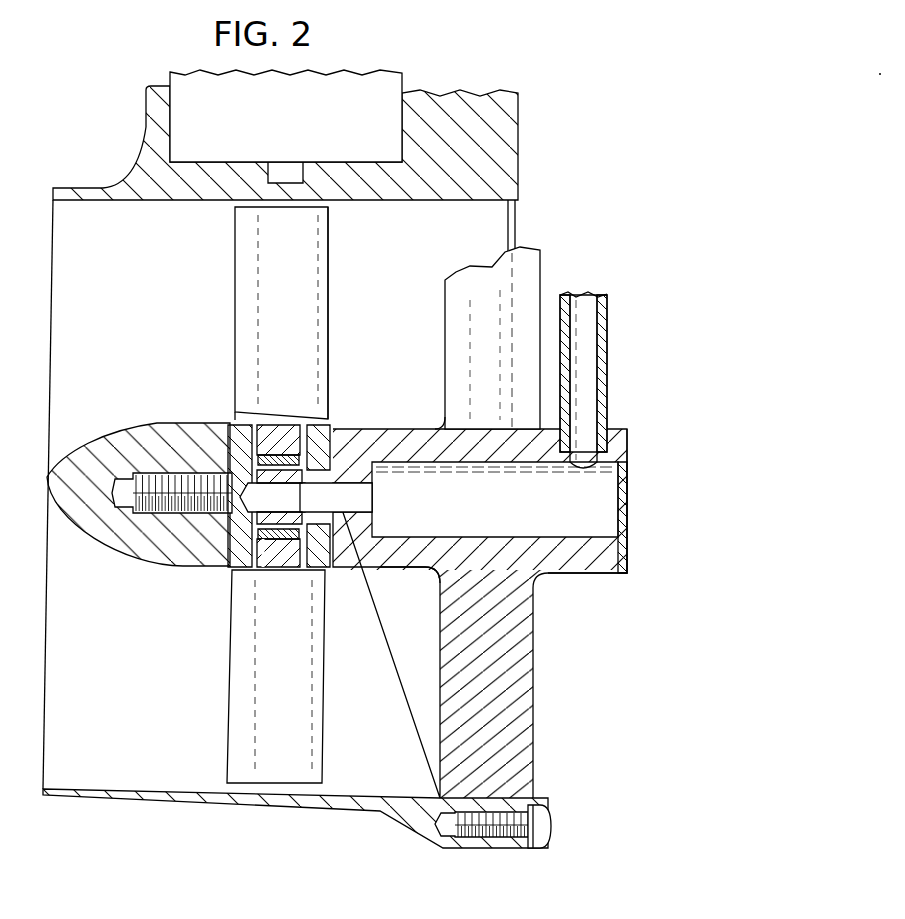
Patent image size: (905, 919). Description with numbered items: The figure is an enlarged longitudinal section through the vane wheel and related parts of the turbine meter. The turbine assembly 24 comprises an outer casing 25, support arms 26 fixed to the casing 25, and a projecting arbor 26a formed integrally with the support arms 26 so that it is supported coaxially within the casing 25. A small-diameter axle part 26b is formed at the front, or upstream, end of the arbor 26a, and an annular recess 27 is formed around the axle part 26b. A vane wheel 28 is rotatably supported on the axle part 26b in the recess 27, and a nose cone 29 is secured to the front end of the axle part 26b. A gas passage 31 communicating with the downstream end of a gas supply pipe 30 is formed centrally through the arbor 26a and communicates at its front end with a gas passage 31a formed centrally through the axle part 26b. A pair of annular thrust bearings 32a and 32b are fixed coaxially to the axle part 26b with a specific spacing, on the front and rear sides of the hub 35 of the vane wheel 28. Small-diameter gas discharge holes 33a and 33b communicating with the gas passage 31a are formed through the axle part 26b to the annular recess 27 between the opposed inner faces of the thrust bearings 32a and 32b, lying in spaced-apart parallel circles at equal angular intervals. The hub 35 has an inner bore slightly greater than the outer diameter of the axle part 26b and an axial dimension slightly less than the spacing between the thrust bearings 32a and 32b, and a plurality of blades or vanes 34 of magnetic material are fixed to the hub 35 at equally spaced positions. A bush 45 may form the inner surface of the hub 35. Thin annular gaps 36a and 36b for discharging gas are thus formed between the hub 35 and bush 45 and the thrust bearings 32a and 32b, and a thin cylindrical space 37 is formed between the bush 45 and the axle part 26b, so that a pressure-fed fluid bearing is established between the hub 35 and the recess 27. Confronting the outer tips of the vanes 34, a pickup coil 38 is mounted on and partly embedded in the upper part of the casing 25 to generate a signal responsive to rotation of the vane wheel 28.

The turbine assembly 24 is at (84, 152).
The outer casing 25 is at (192, 800).
The support arms 26 is at (530, 675).
The projecting arbor 26a is at (398, 565).
The small-diameter axle part 26b is at (228, 567).
The annular recess 27 is at (229, 400).
The vane wheel 28 is at (329, 241).
The nose cone 29 is at (107, 440).
The gas supply pipe 30 is at (607, 353).
The gas passage 31 is at (572, 535).
The gas passage 31a is at (367, 498).
The annular thrust bearing 32a is at (250, 426).
The annular thrust bearing 32b is at (318, 426).
The gas discharge holes 33a is at (272, 497).
The gas discharge holes 33b is at (336, 497).
The blades or vanes 34 is at (322, 288).
The hub 35 is at (266, 424).
The thin annular gap 36a is at (256, 425).
The thin annular gap 36b is at (320, 410).
The thin cylindrical space 37 is at (259, 570).
The pickup coil 38 is at (393, 77).
The bush 45 is at (284, 570).